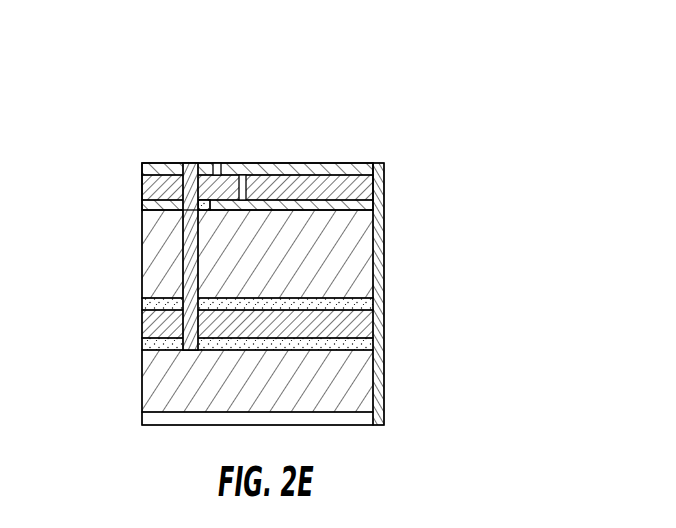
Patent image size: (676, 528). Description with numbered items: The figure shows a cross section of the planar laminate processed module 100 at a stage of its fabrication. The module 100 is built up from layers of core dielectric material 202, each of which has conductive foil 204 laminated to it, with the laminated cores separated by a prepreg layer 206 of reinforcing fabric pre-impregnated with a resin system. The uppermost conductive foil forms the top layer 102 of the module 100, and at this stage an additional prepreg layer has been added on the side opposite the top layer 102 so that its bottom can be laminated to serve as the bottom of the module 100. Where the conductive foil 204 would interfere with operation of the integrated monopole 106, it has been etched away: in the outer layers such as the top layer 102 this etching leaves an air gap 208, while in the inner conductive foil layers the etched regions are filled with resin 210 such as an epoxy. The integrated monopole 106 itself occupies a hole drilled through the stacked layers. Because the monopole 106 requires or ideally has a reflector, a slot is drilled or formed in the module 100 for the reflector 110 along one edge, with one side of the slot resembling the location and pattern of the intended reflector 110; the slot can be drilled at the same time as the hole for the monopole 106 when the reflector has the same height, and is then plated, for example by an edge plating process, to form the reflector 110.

The planar laminate processed module 100 is at (287, 87).
The top layer 102 is at (342, 163).
The integrated monopole 106 is at (190, 163).
The reflector 110 is at (384, 288).
The core dielectric material 202 is at (375, 190).
The conductive foil 204 is at (362, 163).
The prepreg layer 206 is at (378, 263).
The air gap 208 is at (215, 163).
The resin 210 is at (198, 208).